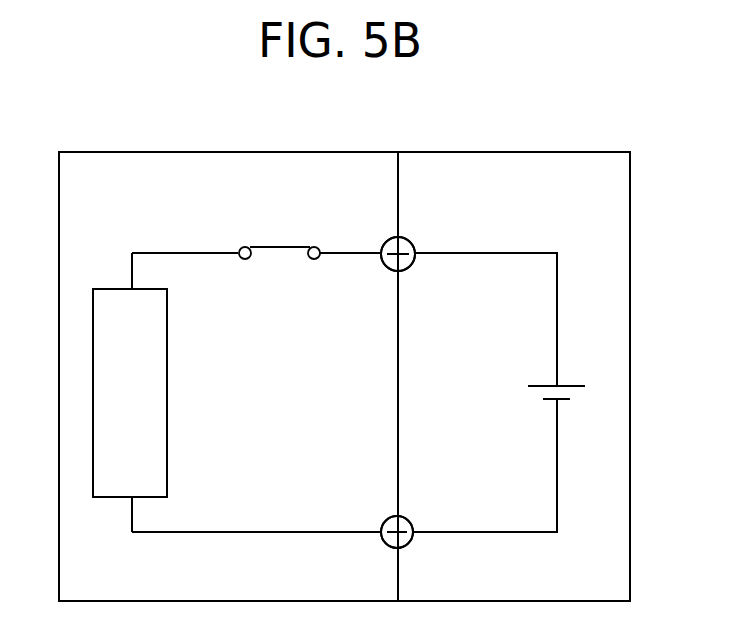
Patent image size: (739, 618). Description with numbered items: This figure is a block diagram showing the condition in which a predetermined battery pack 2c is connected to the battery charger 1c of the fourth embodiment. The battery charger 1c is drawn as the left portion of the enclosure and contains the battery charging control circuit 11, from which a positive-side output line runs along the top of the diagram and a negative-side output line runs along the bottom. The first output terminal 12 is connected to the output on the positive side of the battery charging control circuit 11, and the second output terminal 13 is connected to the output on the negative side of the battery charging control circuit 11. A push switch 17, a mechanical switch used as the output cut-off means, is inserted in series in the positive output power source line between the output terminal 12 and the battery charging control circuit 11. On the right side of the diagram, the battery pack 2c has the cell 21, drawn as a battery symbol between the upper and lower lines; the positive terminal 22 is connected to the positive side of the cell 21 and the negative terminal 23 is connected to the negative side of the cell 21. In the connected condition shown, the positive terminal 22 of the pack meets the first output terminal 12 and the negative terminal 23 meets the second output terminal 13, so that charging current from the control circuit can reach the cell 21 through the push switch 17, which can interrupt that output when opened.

The battery charger 1c is at (138, 152).
The battery pack 2c is at (435, 152).
The battery charging control circuit 11 is at (116, 288).
The push switch 17 is at (280, 246).
The first output terminal 12 is at (386, 266).
The second output terminal 13 is at (385, 548).
The cell 21 is at (567, 384).
The positive terminal 22 is at (415, 242).
The negative terminal 23 is at (410, 546).